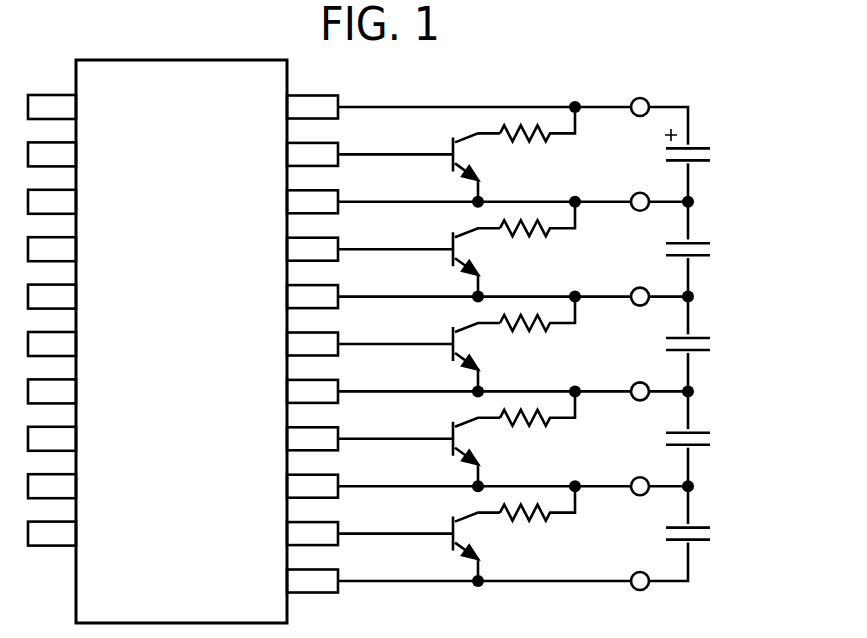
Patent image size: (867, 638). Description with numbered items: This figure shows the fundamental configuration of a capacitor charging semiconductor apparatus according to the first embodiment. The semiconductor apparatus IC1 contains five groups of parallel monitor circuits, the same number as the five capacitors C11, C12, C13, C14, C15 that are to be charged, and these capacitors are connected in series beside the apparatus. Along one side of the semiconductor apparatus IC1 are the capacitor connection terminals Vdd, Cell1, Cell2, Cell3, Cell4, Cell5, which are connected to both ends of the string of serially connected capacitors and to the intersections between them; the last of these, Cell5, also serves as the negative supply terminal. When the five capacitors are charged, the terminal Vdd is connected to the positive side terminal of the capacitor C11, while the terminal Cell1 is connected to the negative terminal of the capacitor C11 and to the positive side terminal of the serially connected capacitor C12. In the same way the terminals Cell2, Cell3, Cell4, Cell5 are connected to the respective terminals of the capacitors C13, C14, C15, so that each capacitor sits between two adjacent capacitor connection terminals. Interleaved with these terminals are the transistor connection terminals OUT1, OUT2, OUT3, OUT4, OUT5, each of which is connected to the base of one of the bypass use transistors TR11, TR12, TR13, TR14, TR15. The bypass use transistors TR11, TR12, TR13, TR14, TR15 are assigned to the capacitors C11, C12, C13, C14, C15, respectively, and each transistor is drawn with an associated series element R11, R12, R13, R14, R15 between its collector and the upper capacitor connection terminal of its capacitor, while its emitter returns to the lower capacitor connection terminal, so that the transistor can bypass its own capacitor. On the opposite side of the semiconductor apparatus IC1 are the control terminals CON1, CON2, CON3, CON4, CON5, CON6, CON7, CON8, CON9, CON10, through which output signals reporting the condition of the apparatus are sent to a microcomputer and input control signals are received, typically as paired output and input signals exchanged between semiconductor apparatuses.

The semiconductor apparatus IC1 is at (181, 341).
The control terminal CON1 is at (88, 107).
The control terminal CON2 is at (88, 154).
The control terminal CON3 is at (88, 202).
The control terminal CON4 is at (88, 249).
The control terminal CON5 is at (88, 297).
The control terminal CON6 is at (88, 344).
The control terminal CON7 is at (88, 391).
The control terminal CON8 is at (88, 439).
The control terminal CON9 is at (88, 486).
The control terminal CON10 is at (95, 534).
The capacitor connection terminal Vdd is at (288, 107).
The transistor connection terminal OUT1 is at (279, 154).
The transistor connection terminal OUT2 is at (279, 249).
The transistor connection terminal OUT3 is at (279, 344).
The transistor connection terminal OUT4 is at (279, 439).
The transistor connection terminal OUT5 is at (279, 534).
The capacitor connection terminal Cell1 is at (282, 202).
The capacitor connection terminal Cell2 is at (282, 297).
The capacitor connection terminal Cell3 is at (282, 391).
The capacitor connection terminal Cell4 is at (282, 486).
The capacitor connection terminal Cell5 is at (282, 592).
The bypass use transistor TR11 is at (445, 164).
The bypass use transistor TR12 is at (445, 259).
The bypass use transistor TR13 is at (445, 354).
The bypass use transistor TR14 is at (445, 448).
The bypass use transistor TR15 is at (445, 543).
The resistor R11 is at (537, 139).
The resistor R12 is at (537, 234).
The resistor R13 is at (537, 329).
The resistor R14 is at (537, 423).
The resistor R15 is at (537, 518).
The capacitor C11 is at (713, 148).
The capacitor C12 is at (713, 249).
The capacitor C13 is at (713, 344).
The capacitor C14 is at (713, 438).
The capacitor C15 is at (713, 533).